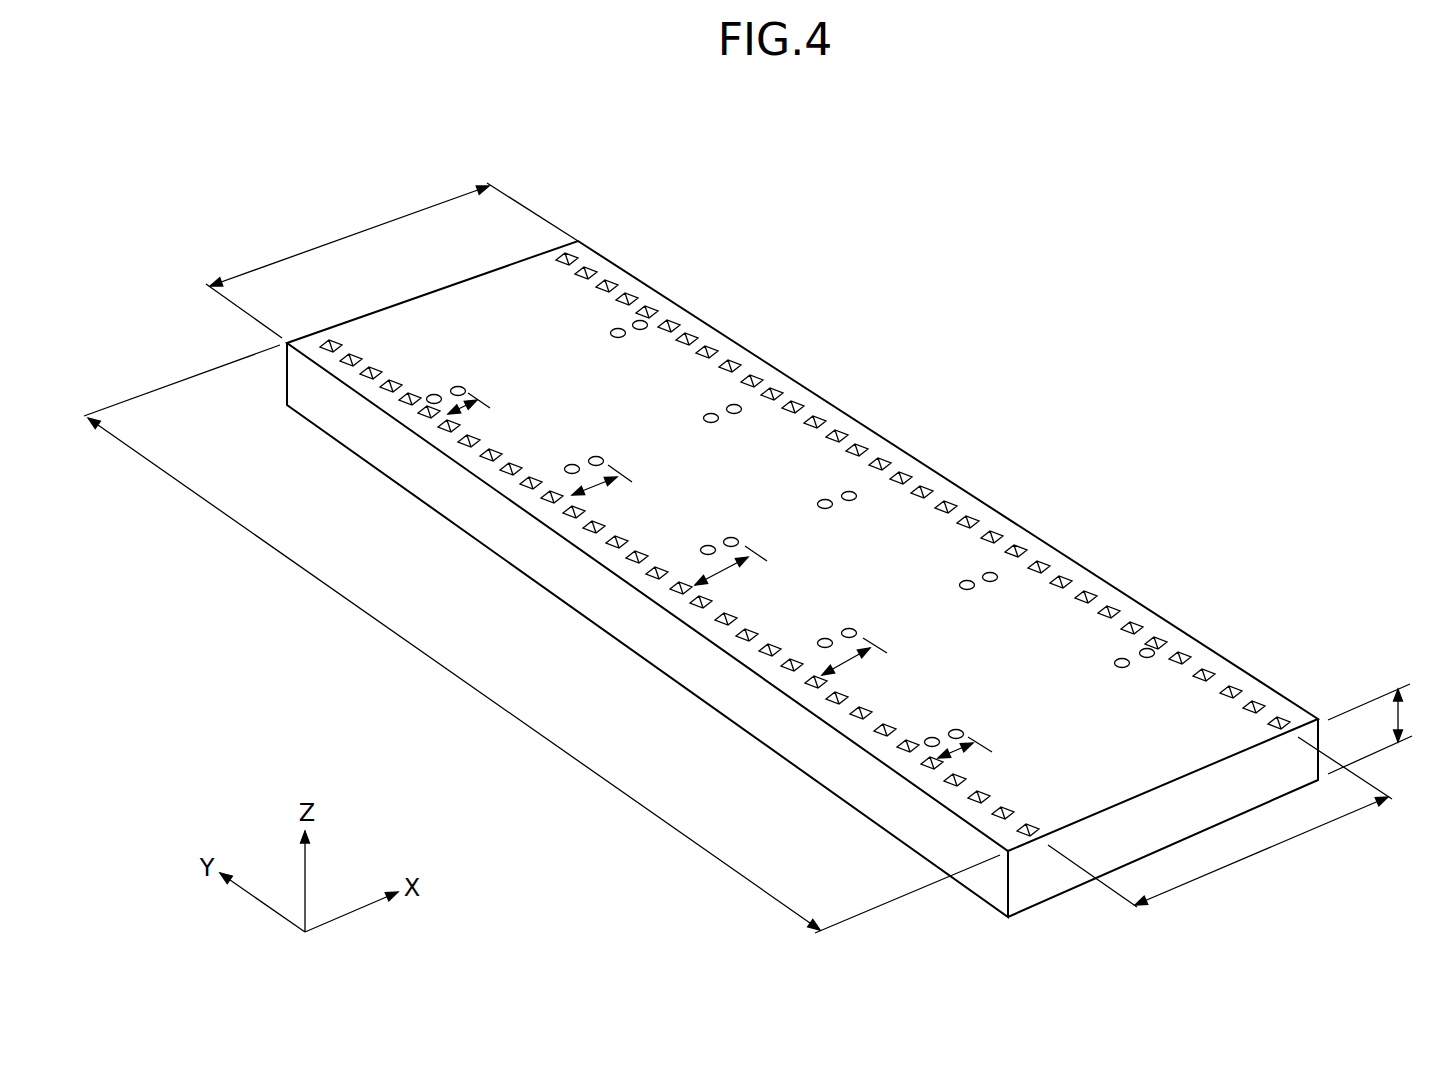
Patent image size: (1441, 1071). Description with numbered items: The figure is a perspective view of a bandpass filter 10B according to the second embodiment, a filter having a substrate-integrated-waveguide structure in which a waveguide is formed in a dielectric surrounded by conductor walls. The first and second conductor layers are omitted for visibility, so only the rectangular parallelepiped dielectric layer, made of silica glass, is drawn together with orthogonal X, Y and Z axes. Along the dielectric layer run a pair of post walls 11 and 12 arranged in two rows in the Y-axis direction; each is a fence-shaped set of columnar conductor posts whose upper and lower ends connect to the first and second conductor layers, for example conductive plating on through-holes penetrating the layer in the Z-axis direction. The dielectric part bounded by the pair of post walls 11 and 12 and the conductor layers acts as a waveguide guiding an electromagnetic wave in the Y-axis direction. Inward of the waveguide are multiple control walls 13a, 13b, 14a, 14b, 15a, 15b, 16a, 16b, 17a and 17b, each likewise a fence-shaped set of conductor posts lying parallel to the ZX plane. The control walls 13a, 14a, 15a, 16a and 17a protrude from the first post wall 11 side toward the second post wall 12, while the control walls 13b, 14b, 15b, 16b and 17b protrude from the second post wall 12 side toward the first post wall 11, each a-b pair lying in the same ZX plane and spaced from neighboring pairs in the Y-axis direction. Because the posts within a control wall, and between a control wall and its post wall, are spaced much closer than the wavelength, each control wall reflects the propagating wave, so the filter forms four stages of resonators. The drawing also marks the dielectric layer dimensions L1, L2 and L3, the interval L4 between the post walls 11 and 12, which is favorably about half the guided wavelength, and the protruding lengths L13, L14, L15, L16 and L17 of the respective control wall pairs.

The bandpass filter 10B is at (190, 150).
The first post wall 11 is at (1215, 670).
The second post wall 12 is at (898, 757).
The control wall 13a is at (1123, 650).
The control wall 13b is at (938, 731).
The control wall 14a is at (972, 573).
The control wall 14b is at (824, 627).
The control wall 15a is at (830, 490).
The control wall 15b is at (712, 537).
The control wall 16a is at (713, 405).
The control wall 16b is at (578, 458).
The control wall 17a is at (614, 320).
The control wall 17b is at (438, 381).
The dielectric layer width dimension L1 is at (392, 260).
The dielectric layer length dimension L2 is at (542, 639).
The dielectric layer thickness dimension L3 is at (1381, 729).
The interval between post walls L4 is at (1220, 822).
The length of control walls 13a and 13b L13 is at (962, 751).
The length of control walls 14a and 14b L14 is at (850, 664).
The length of control walls 15a and 15b L15 is at (727, 571).
The length of control walls 16a and 16b L16 is at (600, 486).
The length of control walls 17a and 17b L17 is at (472, 405).